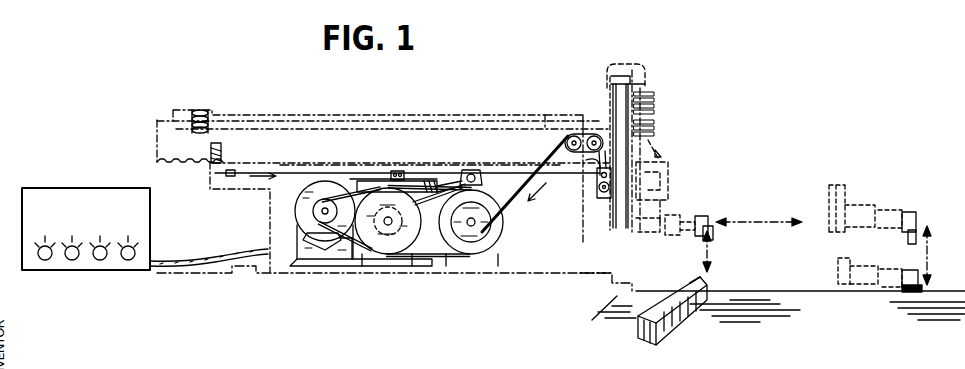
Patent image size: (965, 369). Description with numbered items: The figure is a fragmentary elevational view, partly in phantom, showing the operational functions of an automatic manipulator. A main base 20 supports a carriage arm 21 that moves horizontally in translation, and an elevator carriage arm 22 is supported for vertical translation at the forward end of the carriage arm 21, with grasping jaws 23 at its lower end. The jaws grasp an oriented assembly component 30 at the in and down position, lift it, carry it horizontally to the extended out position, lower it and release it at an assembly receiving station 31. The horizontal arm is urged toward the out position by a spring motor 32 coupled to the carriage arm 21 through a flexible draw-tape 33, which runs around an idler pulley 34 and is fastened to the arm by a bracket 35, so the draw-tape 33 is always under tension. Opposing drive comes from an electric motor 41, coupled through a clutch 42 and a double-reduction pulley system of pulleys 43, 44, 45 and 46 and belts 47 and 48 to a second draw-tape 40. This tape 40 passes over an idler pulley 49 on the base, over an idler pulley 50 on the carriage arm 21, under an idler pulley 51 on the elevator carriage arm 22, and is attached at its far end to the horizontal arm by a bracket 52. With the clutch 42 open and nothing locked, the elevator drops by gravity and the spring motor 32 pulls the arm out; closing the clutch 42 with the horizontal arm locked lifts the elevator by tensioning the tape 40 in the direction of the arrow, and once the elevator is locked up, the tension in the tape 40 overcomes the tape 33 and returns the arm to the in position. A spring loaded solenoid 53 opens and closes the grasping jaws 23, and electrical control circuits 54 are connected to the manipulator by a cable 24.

The main base 20 is at (273, 278).
The carriage arm 21 is at (157, 143).
The elevator carriage arm 22 is at (628, 230).
The grasping jaws 23 is at (708, 216).
The cable 24 is at (210, 256).
The oriented assembly component 30 is at (692, 280).
The assembly receiving station 31 is at (924, 286).
The spring motor 32 is at (432, 180).
The flexible draw-tape 33 is at (340, 164).
The idler pulley 34 is at (478, 158).
The bracket 35 is at (222, 157).
The draw-tape 40 is at (548, 160).
The electric motor 41 is at (302, 201).
The clutch 42 is at (480, 232).
The pulley 43 is at (492, 257).
The pulley 44 is at (398, 172).
The pulley 45 is at (392, 254).
The pulley 46 is at (318, 211).
The belt 47 is at (445, 256).
The belt 48 is at (348, 259).
The idler pulley 49 is at (568, 134).
The idler pulley 50 is at (601, 128).
The idler pulley 51 is at (606, 198).
The bracket 52 is at (598, 168).
The spring loaded solenoid 53 is at (662, 173).
The electrical control circuits 54 is at (86, 188).